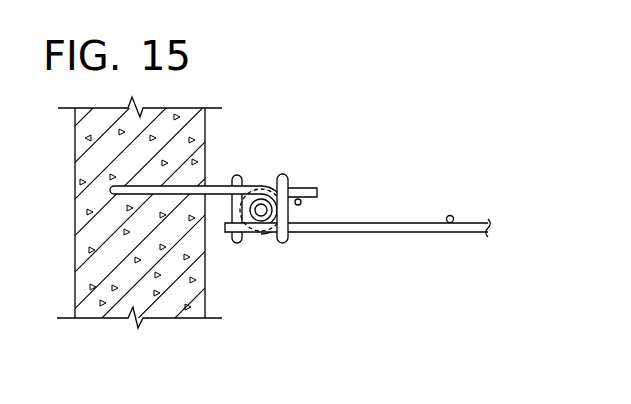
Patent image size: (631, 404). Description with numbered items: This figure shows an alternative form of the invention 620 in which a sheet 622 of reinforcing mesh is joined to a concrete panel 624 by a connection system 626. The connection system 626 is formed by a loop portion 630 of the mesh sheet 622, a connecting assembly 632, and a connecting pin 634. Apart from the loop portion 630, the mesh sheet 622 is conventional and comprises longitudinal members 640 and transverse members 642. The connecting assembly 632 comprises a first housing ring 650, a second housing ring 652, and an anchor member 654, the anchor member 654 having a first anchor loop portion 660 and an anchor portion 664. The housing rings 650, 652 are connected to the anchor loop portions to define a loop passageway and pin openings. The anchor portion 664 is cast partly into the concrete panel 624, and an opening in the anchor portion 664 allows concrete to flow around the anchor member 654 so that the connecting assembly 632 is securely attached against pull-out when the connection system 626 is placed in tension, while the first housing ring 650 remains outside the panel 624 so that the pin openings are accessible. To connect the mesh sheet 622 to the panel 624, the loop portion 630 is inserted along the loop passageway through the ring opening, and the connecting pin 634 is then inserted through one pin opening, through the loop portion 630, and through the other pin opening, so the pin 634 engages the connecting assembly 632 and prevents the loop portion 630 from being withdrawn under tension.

The alternative form of the invention 620 is at (334, 118).
The sheet of reinforcing mesh 622 is at (430, 203).
The concrete panel 624 is at (209, 136).
The connection system 626 is at (313, 242).
The loop portion 630 is at (313, 183).
The connecting assembly 632 is at (299, 253).
The connecting pin 634 is at (261, 212).
The longitudinal members 640 is at (420, 231).
The transverse members 642 is at (302, 203).
The first housing ring 650 is at (153, 187).
The second housing ring 652 is at (281, 244).
The anchor member 654 is at (238, 244).
The first anchor loop portion 660 is at (259, 182).
The anchor portion 664 is at (132, 187).